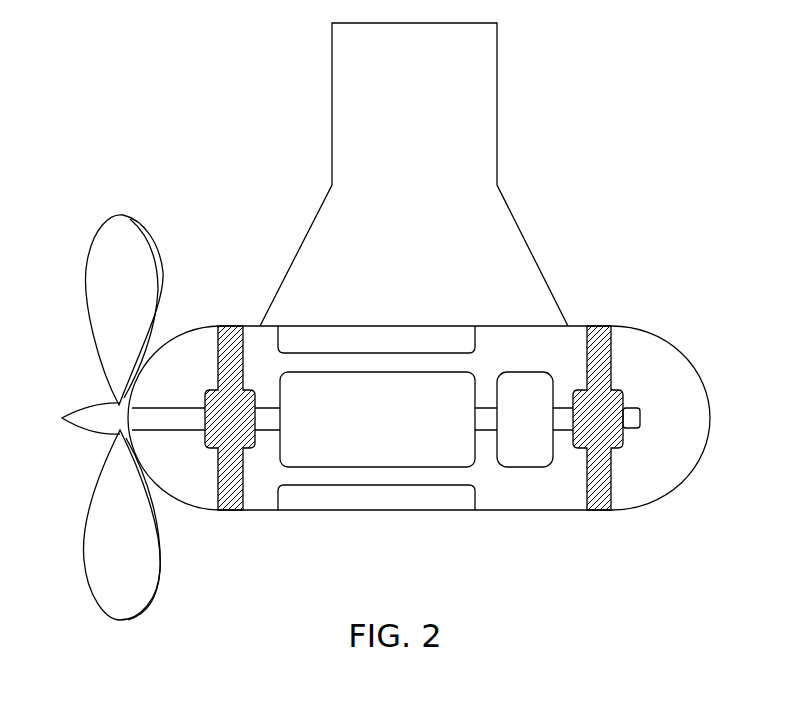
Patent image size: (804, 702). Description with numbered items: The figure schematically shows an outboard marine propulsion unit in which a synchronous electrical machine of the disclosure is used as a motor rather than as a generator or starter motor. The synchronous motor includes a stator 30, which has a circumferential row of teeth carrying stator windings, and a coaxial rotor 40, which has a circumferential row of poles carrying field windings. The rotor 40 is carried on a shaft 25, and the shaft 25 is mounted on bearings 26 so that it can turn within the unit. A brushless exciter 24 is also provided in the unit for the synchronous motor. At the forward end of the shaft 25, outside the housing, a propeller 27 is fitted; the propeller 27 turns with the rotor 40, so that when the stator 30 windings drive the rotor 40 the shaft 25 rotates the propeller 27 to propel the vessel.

The brushless exciter 24 is at (523, 403).
The shaft 25 is at (167, 420).
The bearings 26 is at (642, 413).
The propeller 27 is at (104, 253).
The stator 30 is at (398, 502).
The rotor 40 is at (458, 433).